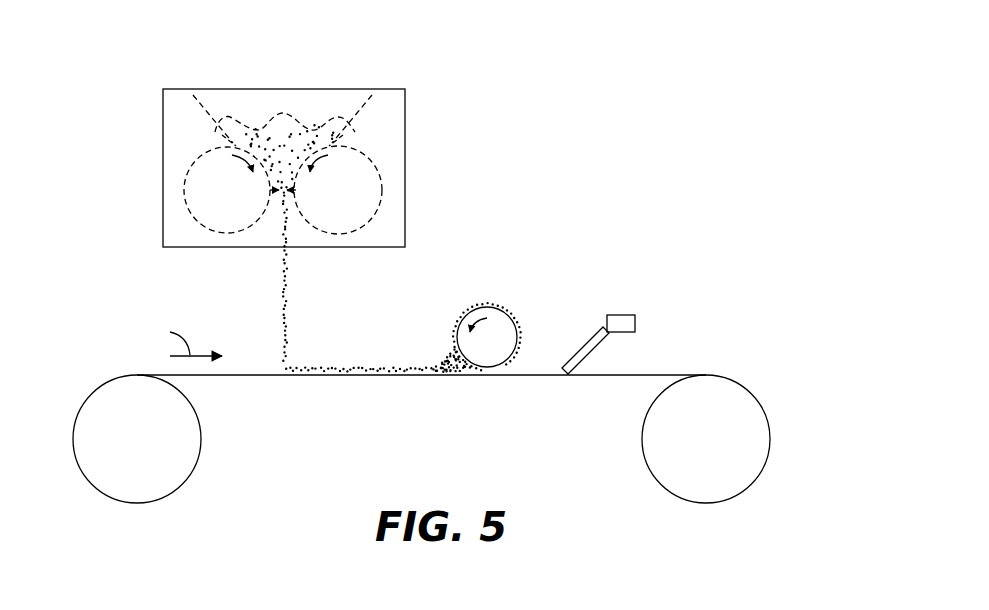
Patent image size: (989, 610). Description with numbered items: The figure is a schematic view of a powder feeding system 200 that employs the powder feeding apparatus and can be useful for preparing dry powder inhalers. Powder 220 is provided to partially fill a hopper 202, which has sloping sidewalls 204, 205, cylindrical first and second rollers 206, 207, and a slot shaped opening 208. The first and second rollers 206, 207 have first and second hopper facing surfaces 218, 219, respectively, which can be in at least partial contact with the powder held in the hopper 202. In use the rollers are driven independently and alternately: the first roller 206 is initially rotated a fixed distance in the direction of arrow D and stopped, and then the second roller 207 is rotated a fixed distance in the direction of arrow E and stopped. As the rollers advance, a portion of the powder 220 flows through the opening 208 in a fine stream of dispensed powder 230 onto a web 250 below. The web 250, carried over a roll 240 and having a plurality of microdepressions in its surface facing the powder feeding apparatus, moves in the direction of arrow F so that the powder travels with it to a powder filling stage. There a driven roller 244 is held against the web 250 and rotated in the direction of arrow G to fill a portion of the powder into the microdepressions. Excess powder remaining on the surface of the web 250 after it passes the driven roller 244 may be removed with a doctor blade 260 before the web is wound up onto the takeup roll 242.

The powder feeding system 200 is at (170, 59).
The hopper 202 is at (207, 89).
The sloping sidewall 204 is at (203, 110).
The sloping sidewall 205 is at (365, 106).
The first roller 206 is at (186, 182).
The second roller 207 is at (383, 184).
The slot shaped opening 208 is at (282, 192).
The first hopper facing surface 218 is at (229, 145).
The second hopper facing surface 219 is at (330, 143).
The powder 220 is at (281, 142).
The dispensed powder 230 is at (289, 292).
The first belt roller 240 is at (197, 462).
The takeup roll 242 is at (643, 446).
The driven roller 244 is at (500, 307).
The web 250 is at (243, 377).
The doctor blade 260 is at (578, 353).